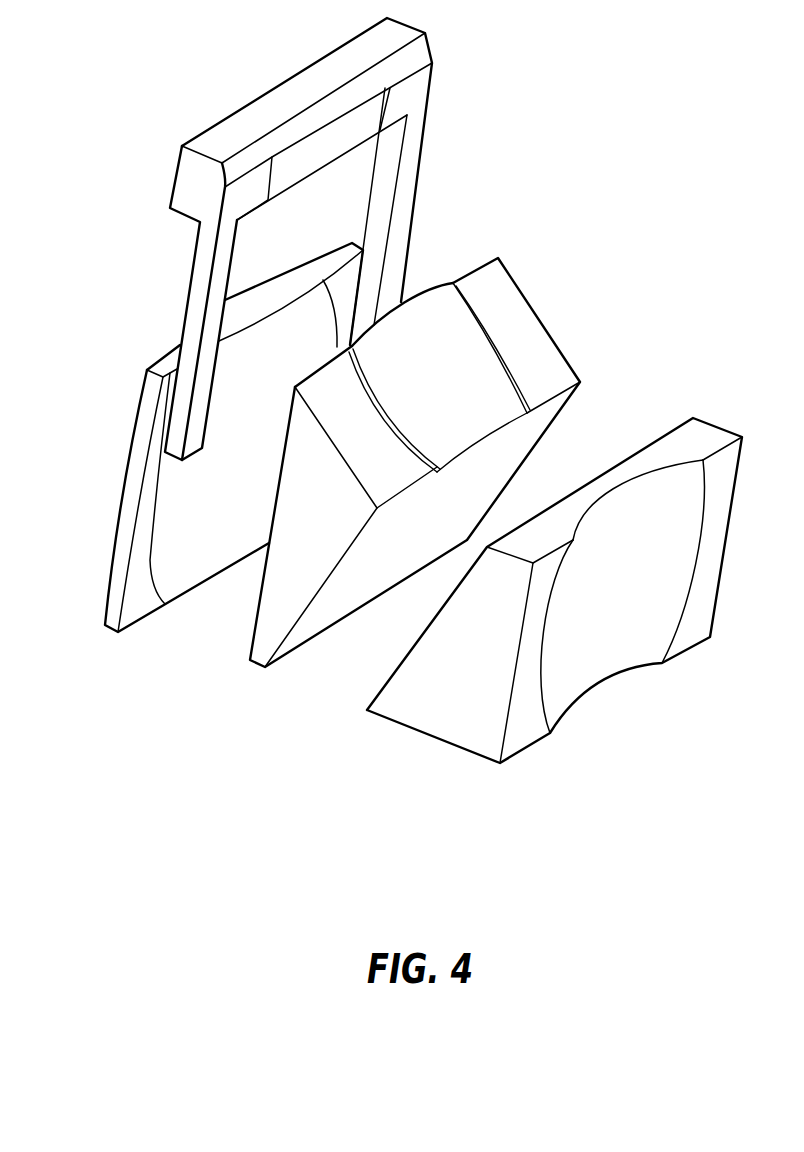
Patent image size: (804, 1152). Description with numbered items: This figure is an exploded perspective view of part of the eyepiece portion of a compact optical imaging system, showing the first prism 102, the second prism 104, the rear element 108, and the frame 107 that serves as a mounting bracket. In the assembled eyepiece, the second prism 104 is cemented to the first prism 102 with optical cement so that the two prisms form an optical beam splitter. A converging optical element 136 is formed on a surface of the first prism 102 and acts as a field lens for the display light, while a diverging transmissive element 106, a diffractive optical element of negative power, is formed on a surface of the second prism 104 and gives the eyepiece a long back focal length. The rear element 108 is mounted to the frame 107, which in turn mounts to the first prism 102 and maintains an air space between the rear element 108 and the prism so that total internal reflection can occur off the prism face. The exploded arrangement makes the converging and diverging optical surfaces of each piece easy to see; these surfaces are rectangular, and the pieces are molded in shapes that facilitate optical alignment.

The first prism 102 is at (363, 464).
The second prism 104 is at (526, 622).
The diverging transmissive element 106 is at (607, 635).
The frame 107 is at (431, 50).
The rear element 108 is at (111, 575).
The converging optical element 136 is at (437, 280).